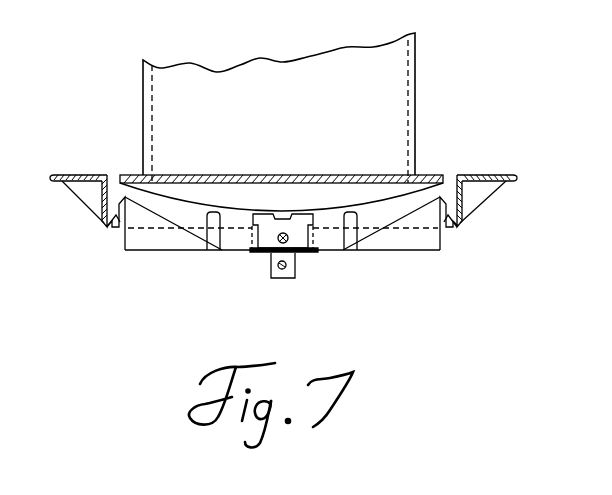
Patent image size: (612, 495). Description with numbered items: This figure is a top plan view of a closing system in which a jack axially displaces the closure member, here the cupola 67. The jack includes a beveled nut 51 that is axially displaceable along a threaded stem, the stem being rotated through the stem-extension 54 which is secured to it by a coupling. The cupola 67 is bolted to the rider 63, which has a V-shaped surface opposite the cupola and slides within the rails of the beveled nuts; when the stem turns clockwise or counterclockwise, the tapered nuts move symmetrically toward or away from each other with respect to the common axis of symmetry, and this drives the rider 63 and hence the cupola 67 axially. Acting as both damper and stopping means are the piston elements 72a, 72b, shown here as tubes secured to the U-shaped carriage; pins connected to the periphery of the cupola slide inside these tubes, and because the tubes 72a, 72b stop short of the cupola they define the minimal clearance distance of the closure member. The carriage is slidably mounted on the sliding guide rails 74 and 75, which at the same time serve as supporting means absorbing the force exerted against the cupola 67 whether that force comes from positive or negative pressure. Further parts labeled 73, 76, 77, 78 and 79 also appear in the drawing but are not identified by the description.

The beveled nut 51 is at (250, 250).
The stem-extension 54 is at (288, 243).
The rider 63 is at (274, 219).
The cupola 67 is at (353, 193).
The piston element (tube) 72a is at (352, 237).
The piston element (tube) 72b is at (213, 237).
The wall panel 73 is at (392, 93).
The sliding guide rail 74 is at (510, 128).
The sliding guide rail 75 is at (75, 175).
The right hook strip 76 is at (442, 232).
The left hook strip 77 is at (124, 238).
The base plate 78 is at (190, 175).
The mounting bracket 79 is at (267, 236).